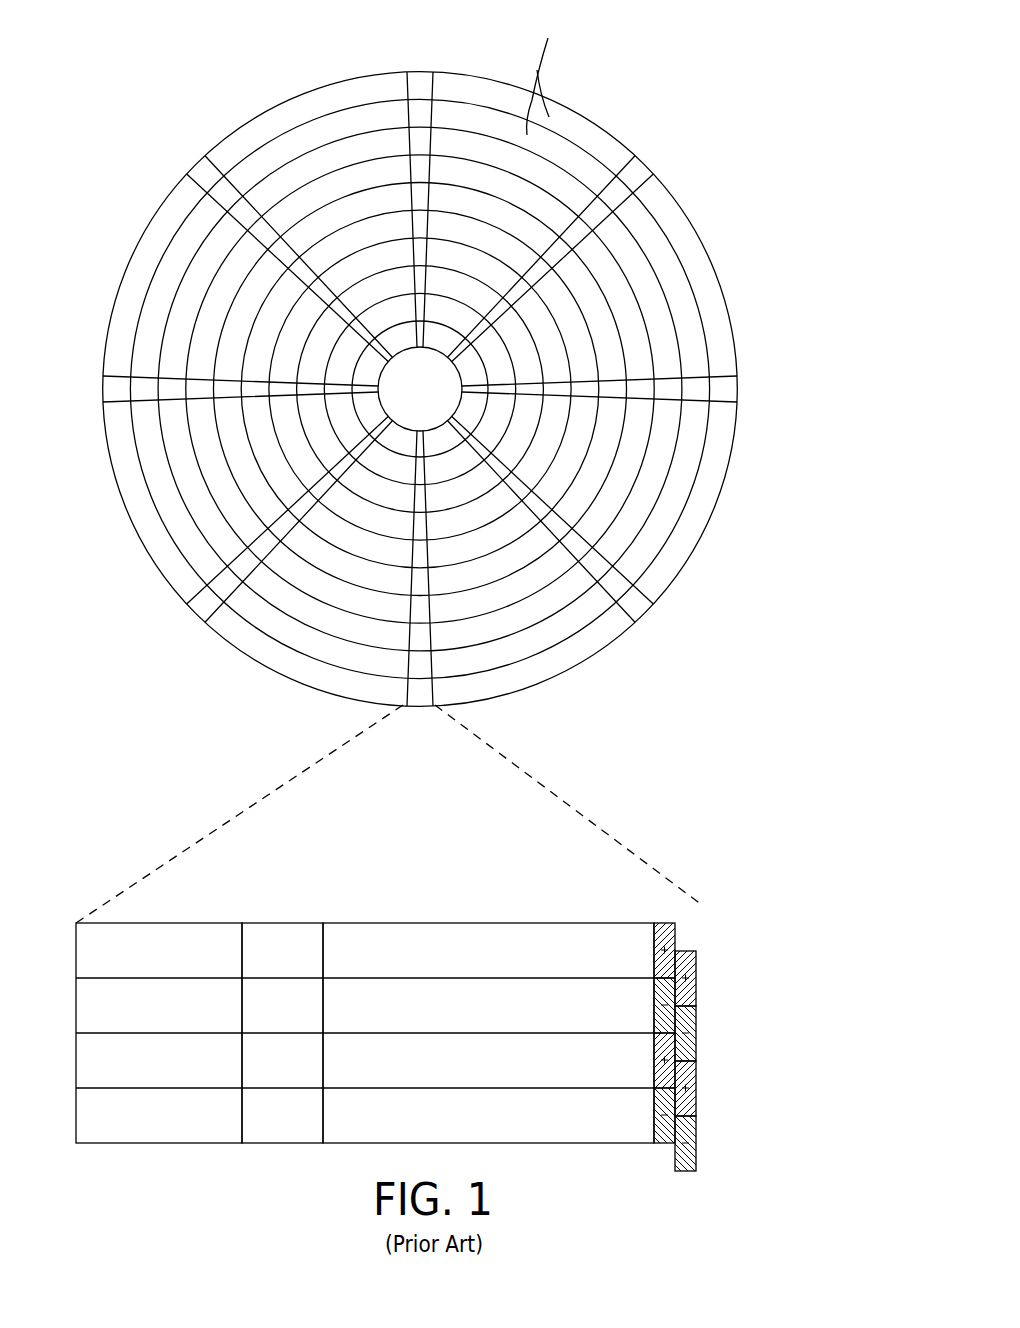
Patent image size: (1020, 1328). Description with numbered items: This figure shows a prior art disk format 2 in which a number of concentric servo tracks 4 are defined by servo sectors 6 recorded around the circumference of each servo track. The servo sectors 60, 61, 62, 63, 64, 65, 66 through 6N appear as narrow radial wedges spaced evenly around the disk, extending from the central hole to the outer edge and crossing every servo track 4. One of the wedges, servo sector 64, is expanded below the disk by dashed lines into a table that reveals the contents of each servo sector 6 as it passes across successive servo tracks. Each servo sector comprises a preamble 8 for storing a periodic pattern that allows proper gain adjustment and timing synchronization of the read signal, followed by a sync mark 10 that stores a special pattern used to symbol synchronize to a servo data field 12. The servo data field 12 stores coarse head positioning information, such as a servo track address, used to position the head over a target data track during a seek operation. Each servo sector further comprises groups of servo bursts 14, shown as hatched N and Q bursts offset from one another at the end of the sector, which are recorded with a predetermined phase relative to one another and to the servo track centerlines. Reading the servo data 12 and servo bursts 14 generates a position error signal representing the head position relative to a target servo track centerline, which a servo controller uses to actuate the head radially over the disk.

The disk format 2 is at (188, 78).
The servo track 4 is at (542, 77).
The servo sectors 6 is at (421, 400).
The servo sector 60 is at (425, 80).
The servo sector 61 is at (637, 170).
The servo sector 62 is at (730, 388).
The servo sector 63 is at (637, 603).
The servo sector 64 is at (283, 783).
The servo sector 65 is at (200, 605).
The servo sector 66 is at (110, 385).
The servo sector 6N is at (204, 165).
The preamble 8 is at (167, 922).
The sync mark 10 is at (287, 922).
The servo data field 12 is at (477, 922).
The servo bursts 14 is at (690, 922).